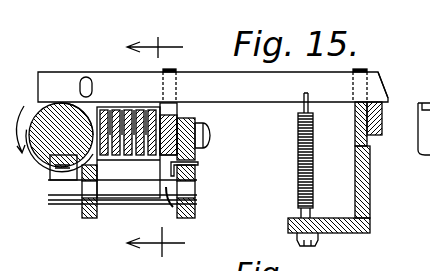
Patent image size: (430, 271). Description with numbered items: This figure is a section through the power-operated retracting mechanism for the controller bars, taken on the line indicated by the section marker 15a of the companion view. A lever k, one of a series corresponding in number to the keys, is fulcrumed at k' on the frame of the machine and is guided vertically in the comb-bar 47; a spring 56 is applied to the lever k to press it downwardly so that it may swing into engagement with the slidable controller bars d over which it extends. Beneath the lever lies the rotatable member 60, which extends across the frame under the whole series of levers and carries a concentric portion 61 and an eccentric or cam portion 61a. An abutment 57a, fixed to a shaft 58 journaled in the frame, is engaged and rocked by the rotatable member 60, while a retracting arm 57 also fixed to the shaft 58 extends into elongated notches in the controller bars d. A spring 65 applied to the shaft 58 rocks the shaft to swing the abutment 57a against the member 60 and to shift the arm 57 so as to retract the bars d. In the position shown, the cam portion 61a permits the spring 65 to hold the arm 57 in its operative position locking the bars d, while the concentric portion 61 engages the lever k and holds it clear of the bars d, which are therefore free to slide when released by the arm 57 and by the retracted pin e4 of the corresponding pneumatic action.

The lever k is at (213, 76).
The fulcrum k' is at (396, 83).
The section line 15a is at (156, 145).
The rotatable member 60 is at (37, 107).
The concentric portion 61 is at (90, 110).
The eccentric or cam portion 61a is at (47, 156).
The shaft 58 is at (197, 191).
The abutment 57a is at (68, 168).
The retracting arm 57 is at (130, 168).
The controller bar d is at (146, 106).
The spring 65 is at (198, 163).
The spring 56 is at (297, 128).
The comb-bar 47 is at (363, 68).
The pin e4 is at (429, 169).